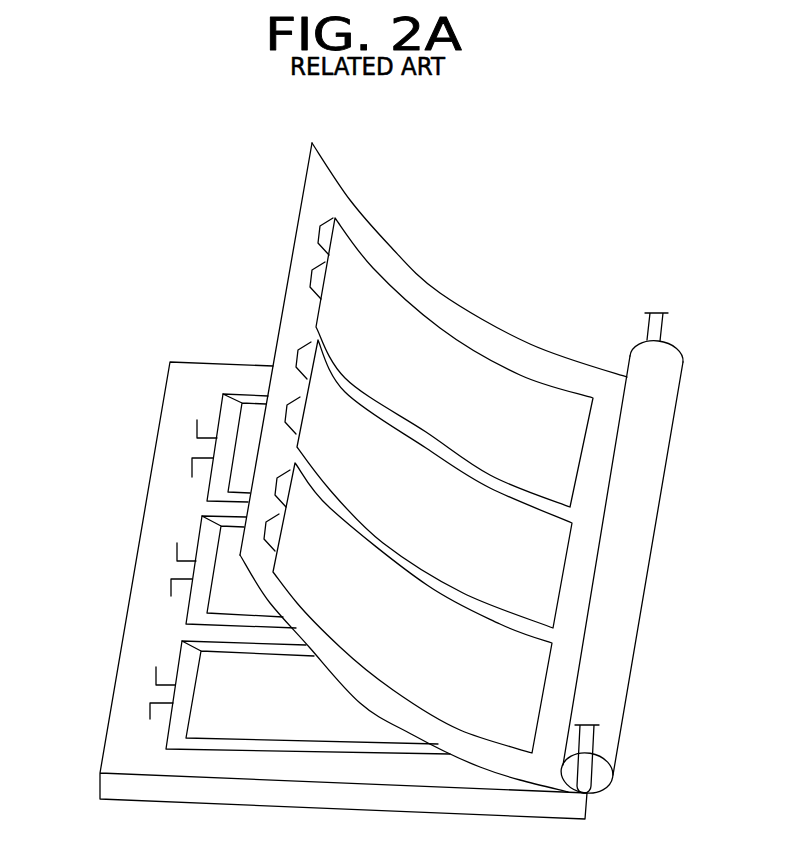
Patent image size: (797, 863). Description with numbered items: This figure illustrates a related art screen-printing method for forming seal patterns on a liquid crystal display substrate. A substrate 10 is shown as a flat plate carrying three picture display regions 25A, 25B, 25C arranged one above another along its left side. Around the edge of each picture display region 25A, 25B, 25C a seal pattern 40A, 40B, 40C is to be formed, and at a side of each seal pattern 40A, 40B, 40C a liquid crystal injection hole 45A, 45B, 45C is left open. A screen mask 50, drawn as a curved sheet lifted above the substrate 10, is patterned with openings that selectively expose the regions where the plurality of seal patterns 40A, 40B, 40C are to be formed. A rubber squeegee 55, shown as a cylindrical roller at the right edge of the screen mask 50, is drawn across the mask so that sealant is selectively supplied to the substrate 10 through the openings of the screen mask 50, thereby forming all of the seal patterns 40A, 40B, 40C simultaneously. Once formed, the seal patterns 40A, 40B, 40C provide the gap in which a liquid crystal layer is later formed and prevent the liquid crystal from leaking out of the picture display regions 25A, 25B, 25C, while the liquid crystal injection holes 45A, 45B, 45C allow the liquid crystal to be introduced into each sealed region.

The substrate 10 is at (207, 362).
The picture display region 25A is at (223, 394).
The liquid crystal injection hole 45A is at (191, 444).
The seal pattern 40A is at (192, 477).
The picture display region 25B is at (202, 516).
The liquid crystal injection hole 45B is at (168, 568).
The seal pattern 40B is at (171, 596).
The picture display region 25C is at (182, 641).
The liquid crystal injection hole 45C is at (147, 691).
The seal pattern 40C is at (150, 719).
The screen mask 50 is at (437, 289).
The rubber squeegee 55 is at (670, 360).